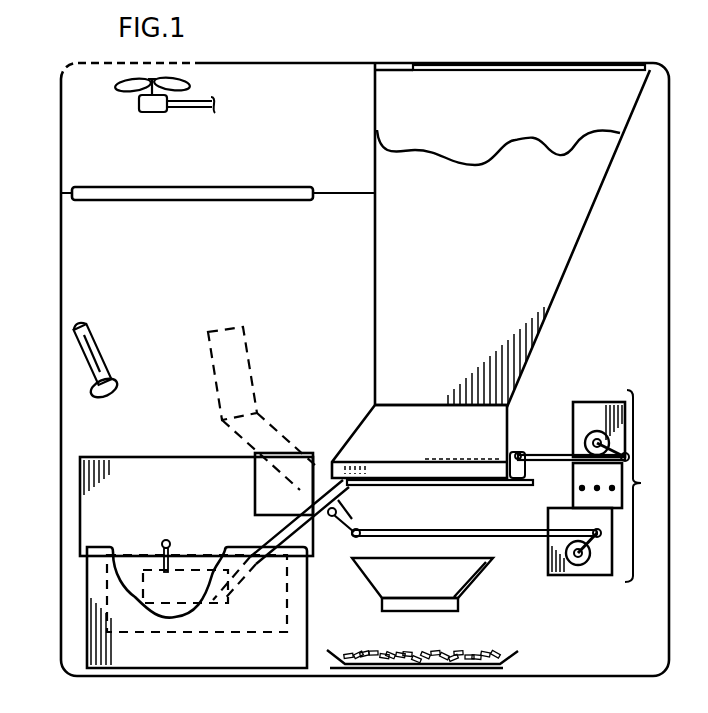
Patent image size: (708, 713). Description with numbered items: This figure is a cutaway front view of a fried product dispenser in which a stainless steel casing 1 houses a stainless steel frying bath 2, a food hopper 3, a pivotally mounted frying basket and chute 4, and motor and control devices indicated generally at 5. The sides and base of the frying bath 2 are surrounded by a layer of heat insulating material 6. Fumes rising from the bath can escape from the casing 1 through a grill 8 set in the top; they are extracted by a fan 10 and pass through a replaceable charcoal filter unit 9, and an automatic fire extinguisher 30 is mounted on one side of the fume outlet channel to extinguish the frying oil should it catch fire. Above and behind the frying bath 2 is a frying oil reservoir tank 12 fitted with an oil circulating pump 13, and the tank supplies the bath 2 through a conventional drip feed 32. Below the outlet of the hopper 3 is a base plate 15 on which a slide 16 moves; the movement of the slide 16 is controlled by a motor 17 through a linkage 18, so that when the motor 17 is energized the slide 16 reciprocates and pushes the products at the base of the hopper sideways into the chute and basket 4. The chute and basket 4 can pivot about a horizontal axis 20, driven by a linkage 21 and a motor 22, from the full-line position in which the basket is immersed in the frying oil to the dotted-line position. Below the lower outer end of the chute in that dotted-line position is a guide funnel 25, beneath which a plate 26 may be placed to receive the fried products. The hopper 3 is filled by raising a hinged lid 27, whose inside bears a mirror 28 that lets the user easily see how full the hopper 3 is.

The casing 1 is at (61, 312).
The frying bath 2 is at (140, 548).
The food hopper 3 is at (478, 272).
The frying basket and chute 4 is at (275, 530).
The motor and control devices 5 is at (644, 486).
The heat insulating material 6 is at (63, 606).
The grill 8 is at (194, 64).
The charcoal filter unit 9 is at (205, 187).
The fan 10 is at (152, 112).
The frying oil reservoir tank 12 is at (147, 457).
The oil circulating pump 13 is at (255, 478).
The base plate 15 is at (372, 487).
The slide 16 is at (470, 463).
The motor 17 is at (598, 402).
The linkage 18 is at (550, 453).
The horizontal axis 20 is at (330, 522).
The linkage 21 is at (488, 528).
The motor 22 is at (565, 576).
The guide funnel 25 is at (378, 583).
The plate 26 is at (510, 655).
The hinged lid 27 is at (387, 68).
The mirror 28 is at (577, 72).
The automatic fire extinguisher 30 is at (90, 340).
The drip feed 32 is at (170, 542).